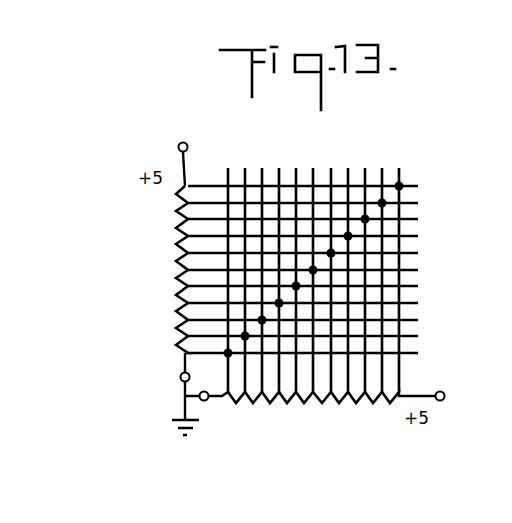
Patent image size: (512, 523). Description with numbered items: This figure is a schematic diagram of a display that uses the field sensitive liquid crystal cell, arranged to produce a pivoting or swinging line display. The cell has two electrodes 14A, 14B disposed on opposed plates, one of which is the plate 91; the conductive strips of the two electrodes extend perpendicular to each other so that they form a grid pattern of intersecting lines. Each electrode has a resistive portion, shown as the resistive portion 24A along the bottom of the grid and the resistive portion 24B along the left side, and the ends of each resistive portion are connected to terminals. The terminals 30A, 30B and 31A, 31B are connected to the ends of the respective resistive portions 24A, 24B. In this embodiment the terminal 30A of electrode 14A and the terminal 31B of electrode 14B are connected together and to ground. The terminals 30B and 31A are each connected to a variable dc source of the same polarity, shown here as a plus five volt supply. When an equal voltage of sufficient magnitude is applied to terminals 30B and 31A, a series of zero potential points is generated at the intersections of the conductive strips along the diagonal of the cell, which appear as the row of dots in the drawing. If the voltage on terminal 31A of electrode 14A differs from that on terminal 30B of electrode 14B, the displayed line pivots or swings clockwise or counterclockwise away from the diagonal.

The electrode 14A is at (408, 380).
The electrode 14B is at (204, 181).
The resistive portion 24A is at (333, 408).
The resistive portion 24B is at (167, 297).
The terminal 30A is at (208, 400).
The terminal 30B is at (179, 144).
The terminal 31A is at (444, 399).
The terminal 31B is at (181, 375).
The plate 91 is at (455, 151).